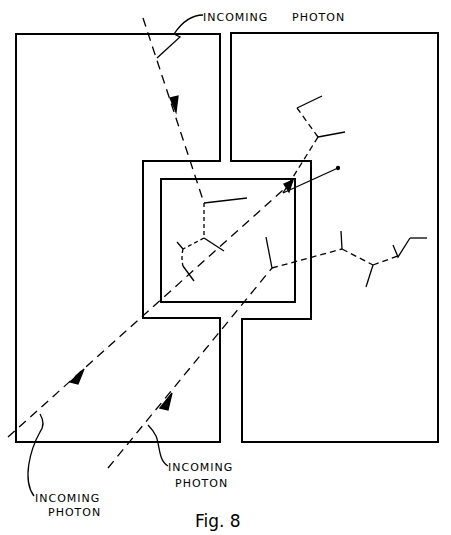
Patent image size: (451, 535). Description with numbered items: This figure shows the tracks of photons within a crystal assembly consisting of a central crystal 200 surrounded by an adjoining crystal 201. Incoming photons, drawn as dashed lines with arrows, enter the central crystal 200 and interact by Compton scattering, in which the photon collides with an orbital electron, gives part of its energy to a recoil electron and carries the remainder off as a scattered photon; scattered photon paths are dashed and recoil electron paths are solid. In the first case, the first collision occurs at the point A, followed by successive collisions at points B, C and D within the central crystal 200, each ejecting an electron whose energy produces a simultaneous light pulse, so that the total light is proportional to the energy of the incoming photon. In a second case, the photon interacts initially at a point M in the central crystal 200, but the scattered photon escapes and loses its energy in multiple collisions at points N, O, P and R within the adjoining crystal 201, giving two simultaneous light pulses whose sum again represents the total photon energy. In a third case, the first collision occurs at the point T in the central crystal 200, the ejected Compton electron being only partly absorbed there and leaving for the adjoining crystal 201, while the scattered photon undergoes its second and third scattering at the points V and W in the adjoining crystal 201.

The central crystal 200 is at (170, 214).
The adjoining crystal 201 is at (418, 433).
The point A is at (225, 195).
The point B is at (214, 237).
The point C is at (185, 252).
The point D is at (180, 273).
The point M is at (263, 256).
The point N is at (339, 250).
The point O is at (376, 276).
The point P is at (402, 253).
The point R is at (416, 230).
The point T is at (303, 182).
The point V is at (331, 128).
The point W is at (304, 99).